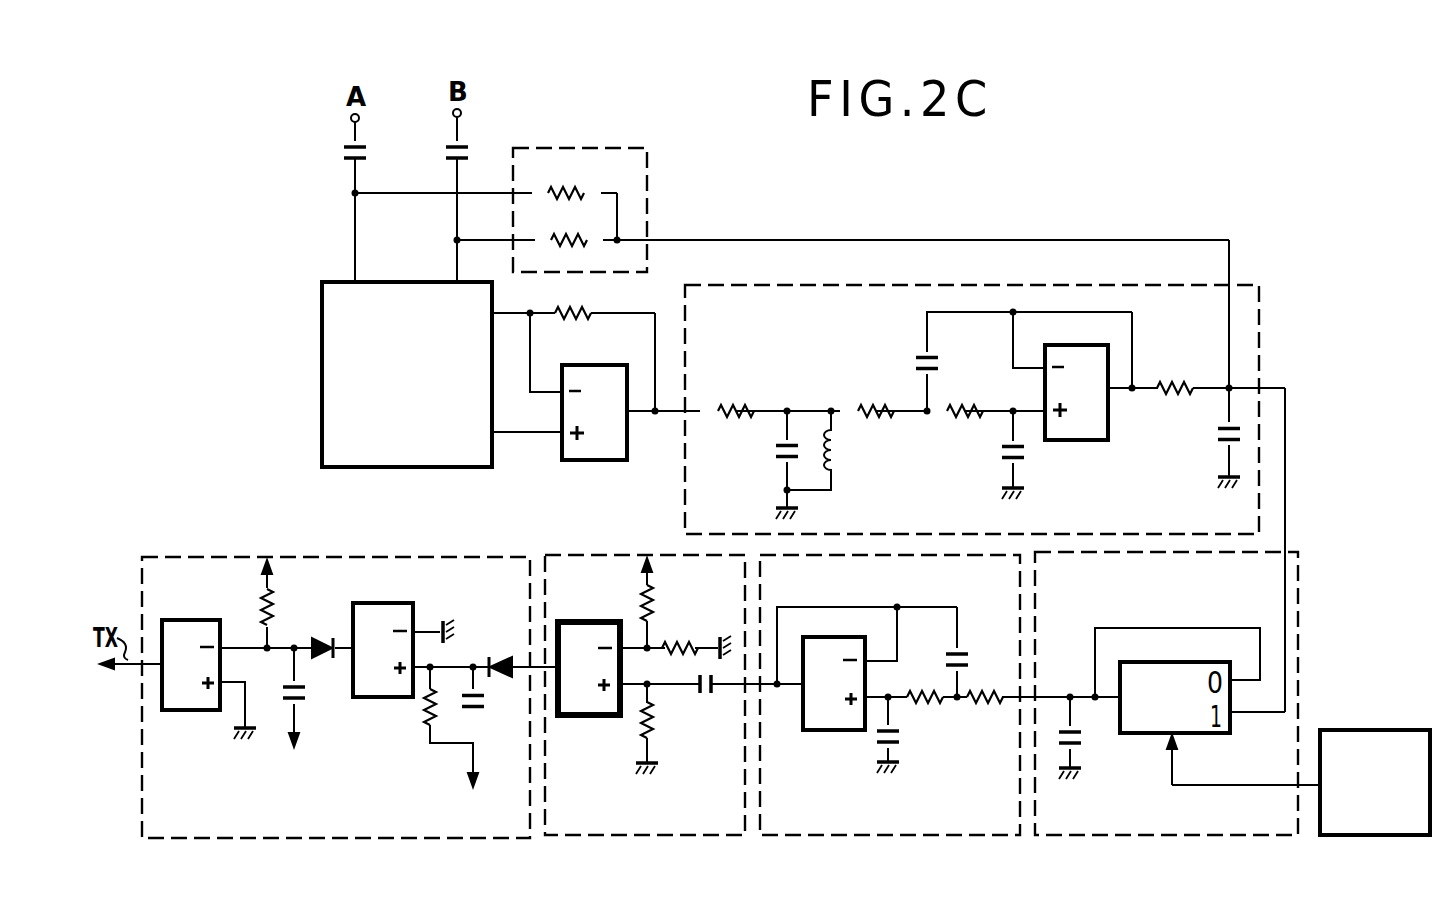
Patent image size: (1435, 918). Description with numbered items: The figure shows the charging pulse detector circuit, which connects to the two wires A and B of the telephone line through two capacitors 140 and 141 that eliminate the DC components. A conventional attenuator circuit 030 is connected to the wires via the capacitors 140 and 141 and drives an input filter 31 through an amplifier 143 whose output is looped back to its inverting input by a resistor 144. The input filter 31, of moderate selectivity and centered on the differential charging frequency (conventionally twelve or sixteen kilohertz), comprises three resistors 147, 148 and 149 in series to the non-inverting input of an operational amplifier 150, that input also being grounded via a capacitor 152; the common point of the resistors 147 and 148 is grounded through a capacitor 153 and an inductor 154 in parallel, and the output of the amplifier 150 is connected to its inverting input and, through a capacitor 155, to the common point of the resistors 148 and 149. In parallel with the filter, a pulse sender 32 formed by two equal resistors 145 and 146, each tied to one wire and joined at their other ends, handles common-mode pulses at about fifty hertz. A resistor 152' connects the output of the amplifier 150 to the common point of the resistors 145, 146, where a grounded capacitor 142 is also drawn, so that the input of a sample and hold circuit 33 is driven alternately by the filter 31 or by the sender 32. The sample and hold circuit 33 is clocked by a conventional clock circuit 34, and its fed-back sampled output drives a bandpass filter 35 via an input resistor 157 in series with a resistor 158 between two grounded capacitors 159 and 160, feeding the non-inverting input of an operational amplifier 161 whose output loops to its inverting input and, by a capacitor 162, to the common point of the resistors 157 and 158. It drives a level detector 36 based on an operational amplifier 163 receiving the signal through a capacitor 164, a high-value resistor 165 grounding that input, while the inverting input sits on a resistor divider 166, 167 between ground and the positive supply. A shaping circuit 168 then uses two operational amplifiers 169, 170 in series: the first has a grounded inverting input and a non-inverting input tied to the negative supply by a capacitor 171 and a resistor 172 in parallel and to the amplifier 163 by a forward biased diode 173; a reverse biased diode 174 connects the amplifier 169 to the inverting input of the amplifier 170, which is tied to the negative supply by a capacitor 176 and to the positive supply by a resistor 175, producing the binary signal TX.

The capacitor 140 is at (345, 152).
The capacitor 141 is at (447, 152).
The resistor 145 is at (572, 190).
The resistor 146 is at (568, 236).
The pulse sender 32 is at (633, 200).
The attenuator circuit 030 is at (348, 368).
The resistor 144 is at (580, 321).
The amplifier 143 is at (594, 454).
The resistor 147 is at (722, 405).
The resistor 148 is at (882, 404).
The resistor 149 is at (959, 405).
The capacitor 153 is at (774, 452).
The inductor 154 is at (840, 454).
The capacitor 155 is at (920, 357).
The capacitor 152 is at (985, 455).
The operational amplifier 150 is at (1088, 446).
The resistor 152' is at (1187, 367).
The output capacitor 142 is at (1218, 440).
The input filter 31 is at (1247, 325).
The shaping circuit 168 is at (350, 575).
The operational amplifier 170 is at (190, 637).
The resistor 175 is at (272, 590).
The capacitor 176 is at (285, 700).
The reverse biased diode 174 is at (325, 658).
The operational amplifier 169 is at (375, 617).
The forward biased diode 173 is at (513, 625).
The resistor 172 is at (425, 718).
The capacitor 171 is at (485, 702).
The level detector 36 is at (580, 568).
The operational amplifier 163 is at (588, 638).
The resistor 167 is at (651, 605).
The resistor 166 is at (662, 648).
The capacitor 164 is at (707, 698).
The high-value resistor 165 is at (636, 720).
The bandpass filter 35 is at (916, 573).
The operational amplifier 161 is at (833, 715).
The capacitor 162 is at (966, 658).
The capacitor 160 is at (876, 740).
The resistor 158 is at (912, 703).
The input resistor 157 is at (967, 703).
The sample and hold circuit 33 is at (1294, 612).
The capacitor 159 is at (1083, 737).
The clock circuit 34 is at (1359, 750).